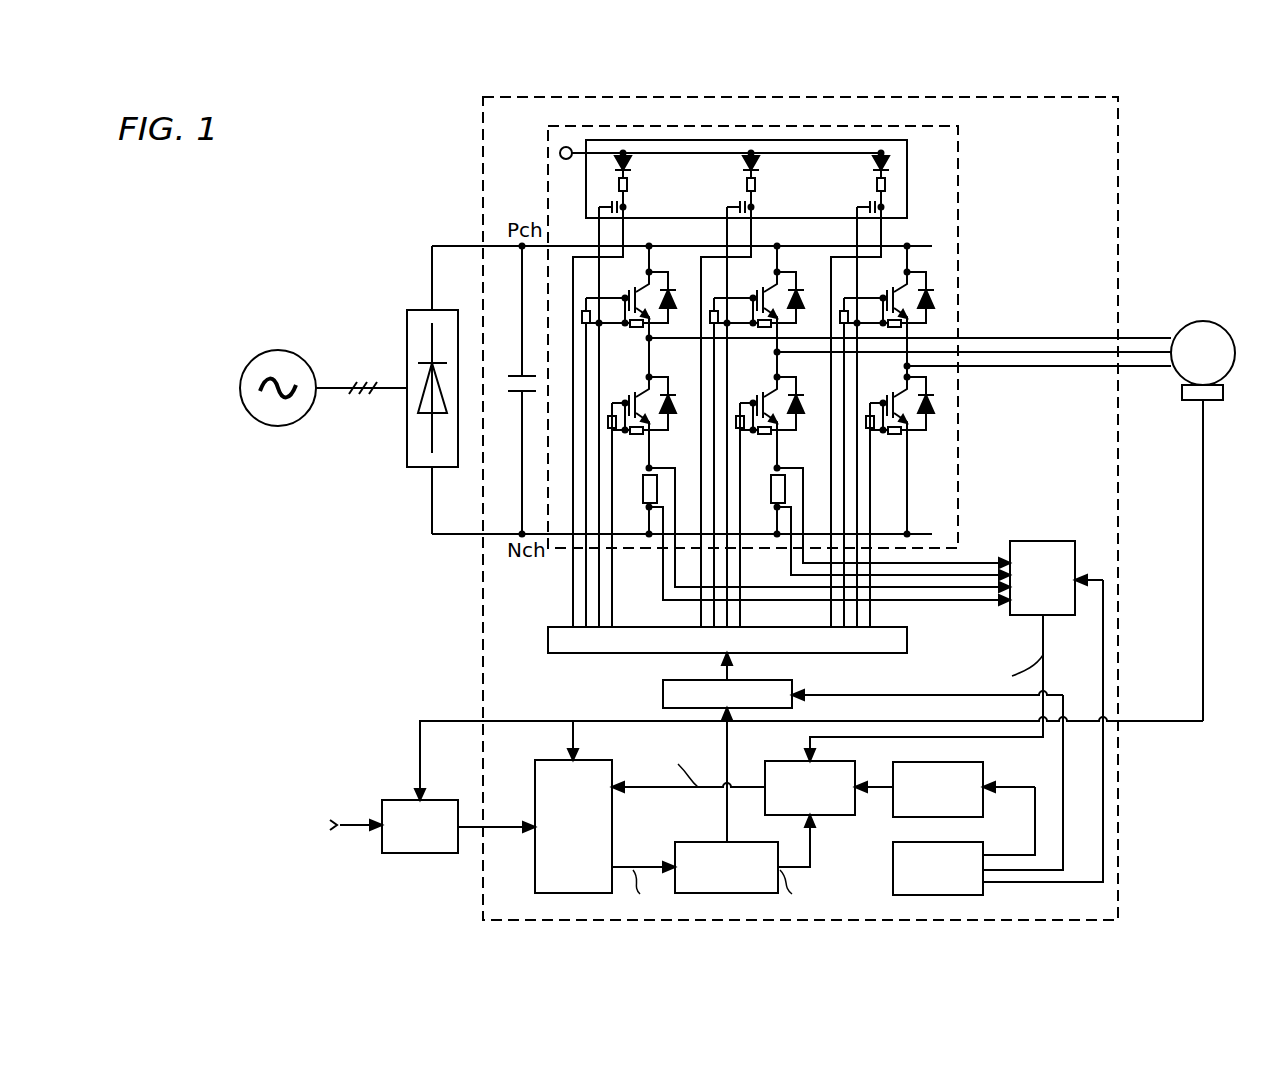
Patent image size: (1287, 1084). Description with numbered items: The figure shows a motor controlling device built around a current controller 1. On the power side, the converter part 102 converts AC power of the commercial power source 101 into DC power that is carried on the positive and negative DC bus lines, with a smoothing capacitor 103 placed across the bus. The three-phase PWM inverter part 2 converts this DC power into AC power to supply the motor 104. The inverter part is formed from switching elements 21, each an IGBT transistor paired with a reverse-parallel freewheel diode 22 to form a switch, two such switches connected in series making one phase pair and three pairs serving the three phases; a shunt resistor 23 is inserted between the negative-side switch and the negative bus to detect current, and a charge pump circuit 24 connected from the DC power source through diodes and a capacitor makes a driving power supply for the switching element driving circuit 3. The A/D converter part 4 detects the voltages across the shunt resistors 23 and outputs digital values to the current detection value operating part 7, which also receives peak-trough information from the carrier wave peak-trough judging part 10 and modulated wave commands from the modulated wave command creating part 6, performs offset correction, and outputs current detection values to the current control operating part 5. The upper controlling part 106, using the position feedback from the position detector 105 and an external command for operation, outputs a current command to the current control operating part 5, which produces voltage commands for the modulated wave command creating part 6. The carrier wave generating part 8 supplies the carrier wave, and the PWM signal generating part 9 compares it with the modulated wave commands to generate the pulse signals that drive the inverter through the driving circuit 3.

The current controller 1 is at (1106, 183).
The three-phase PWM inverter part 2 is at (948, 236).
The switching element driving circuit 3 is at (562, 636).
The A/D converter part 4 is at (1046, 549).
The current control operating part 5 is at (542, 792).
The modulated wave command creating part 6 is at (701, 853).
The current detection value operating part 7 is at (771, 786).
The carrier wave generating part 8 is at (893, 880).
The PWM signal generating part 9 is at (663, 695).
The carrier wave peak-trough judging part 10 is at (916, 812).
The switching element 21 is at (641, 293).
The freewheel diode 22 is at (682, 291).
The shunt resistor 23 is at (648, 481).
The charge pump circuit 24 is at (586, 207).
The commercial power source 101 is at (293, 367).
The converter part 102 is at (423, 316).
The smoothing capacitor 103 is at (512, 366).
The motor 104 is at (1200, 326).
The position detector 105 is at (1212, 399).
The upper controlling part 106 is at (399, 809).